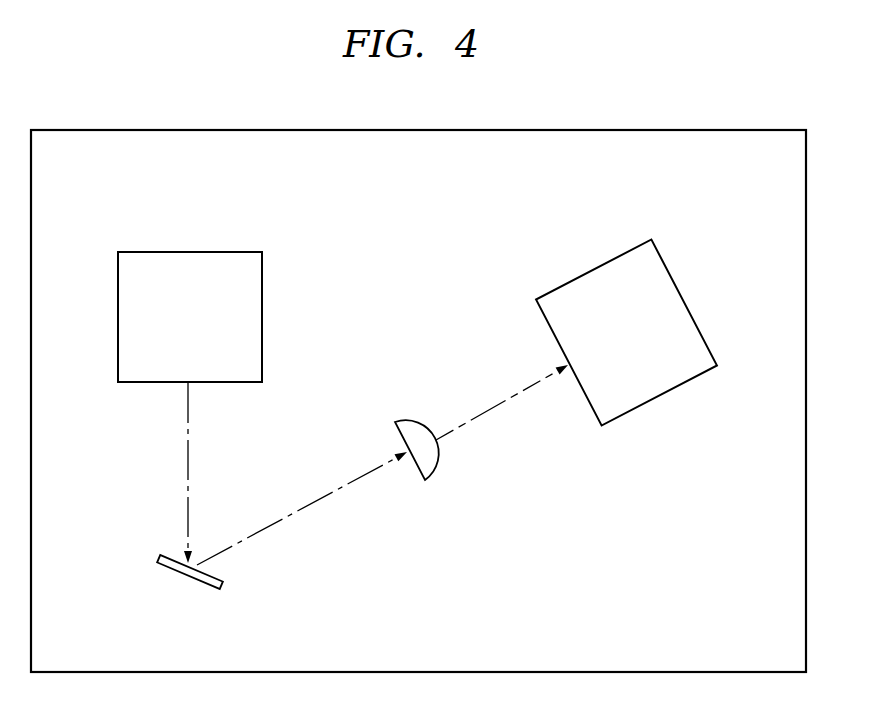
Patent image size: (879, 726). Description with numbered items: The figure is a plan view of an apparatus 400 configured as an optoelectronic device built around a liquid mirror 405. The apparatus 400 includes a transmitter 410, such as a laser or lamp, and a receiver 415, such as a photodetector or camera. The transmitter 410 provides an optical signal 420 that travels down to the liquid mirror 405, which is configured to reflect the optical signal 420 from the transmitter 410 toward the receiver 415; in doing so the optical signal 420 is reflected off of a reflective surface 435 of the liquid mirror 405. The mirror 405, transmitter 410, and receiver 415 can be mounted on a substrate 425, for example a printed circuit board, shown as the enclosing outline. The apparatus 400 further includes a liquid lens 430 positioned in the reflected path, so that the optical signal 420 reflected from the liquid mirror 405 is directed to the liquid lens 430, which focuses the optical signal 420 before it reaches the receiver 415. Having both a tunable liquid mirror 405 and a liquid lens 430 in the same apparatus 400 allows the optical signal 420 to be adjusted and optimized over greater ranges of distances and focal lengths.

The apparatus 400 is at (153, 113).
The liquid mirror 405 is at (217, 533).
The transmitter 410 is at (199, 252).
The receiver 415 is at (678, 287).
The optical signal 420 is at (188, 466).
The substrate 425 is at (756, 637).
The liquid lens 430 is at (436, 466).
The reflective surface 435 is at (232, 573).